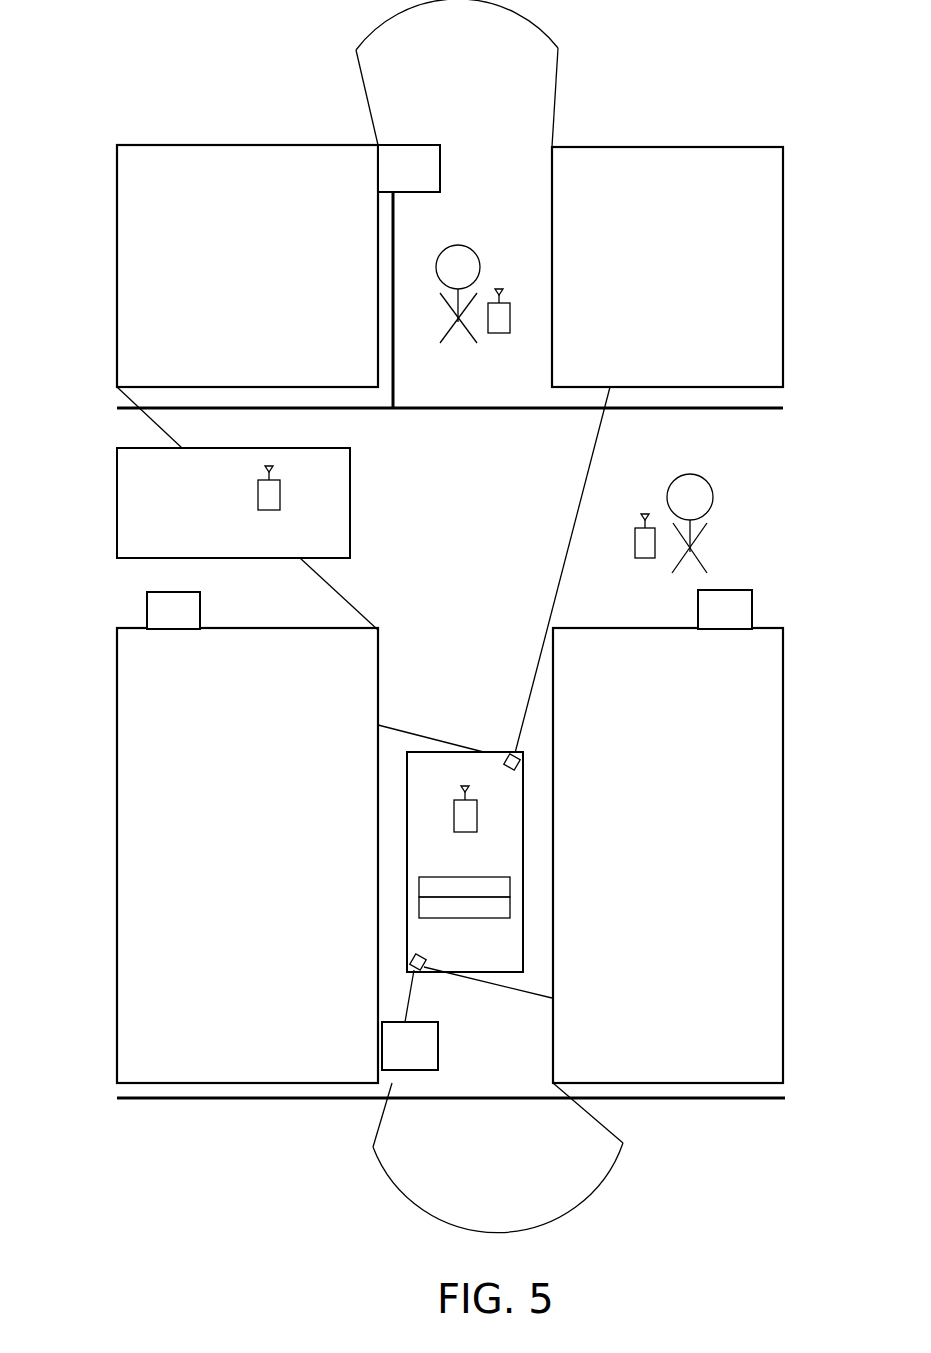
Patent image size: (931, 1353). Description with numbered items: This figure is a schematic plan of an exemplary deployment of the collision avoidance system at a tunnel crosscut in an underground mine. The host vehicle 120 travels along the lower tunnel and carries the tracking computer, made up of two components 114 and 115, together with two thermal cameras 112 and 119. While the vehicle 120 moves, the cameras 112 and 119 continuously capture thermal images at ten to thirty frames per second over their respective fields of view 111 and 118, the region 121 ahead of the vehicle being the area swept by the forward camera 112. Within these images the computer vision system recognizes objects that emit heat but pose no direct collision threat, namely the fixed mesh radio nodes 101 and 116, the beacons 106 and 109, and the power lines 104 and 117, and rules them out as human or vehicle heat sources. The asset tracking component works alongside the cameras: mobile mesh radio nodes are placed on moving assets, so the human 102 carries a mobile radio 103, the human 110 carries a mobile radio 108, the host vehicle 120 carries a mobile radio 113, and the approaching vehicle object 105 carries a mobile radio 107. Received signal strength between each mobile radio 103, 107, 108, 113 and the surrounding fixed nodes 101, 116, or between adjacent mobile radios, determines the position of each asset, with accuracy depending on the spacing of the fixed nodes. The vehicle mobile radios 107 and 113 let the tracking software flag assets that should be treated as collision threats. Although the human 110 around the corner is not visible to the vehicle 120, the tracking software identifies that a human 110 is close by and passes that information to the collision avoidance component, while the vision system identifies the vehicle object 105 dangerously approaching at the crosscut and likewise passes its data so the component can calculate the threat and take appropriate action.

The fixed mesh radio node 101 is at (412, 145).
The human 102 is at (480, 264).
The mobile mesh radio node 103 is at (510, 333).
The power line 104 is at (393, 339).
The vehicle object 105 is at (117, 480).
The beacon 106 is at (147, 599).
The mobile mesh radio node 107 is at (257, 520).
The mobile mesh radio node 108 is at (634, 542).
The beacon 109 is at (762, 573).
The human 110 is at (688, 497).
The field of view 111 is at (360, 597).
The camera 112 is at (520, 767).
The mobile mesh radio node 113 is at (454, 818).
The tracking computer component 114 is at (510, 882).
The tracking computer component 115 is at (510, 906).
The fixed mesh radio node 116 is at (382, 1045).
The power line 117 is at (367, 1103).
The field of view 118 is at (565, 1078).
The camera 119 is at (408, 957).
The vehicle 120 is at (405, 835).
The monitored region 121 is at (565, 461).